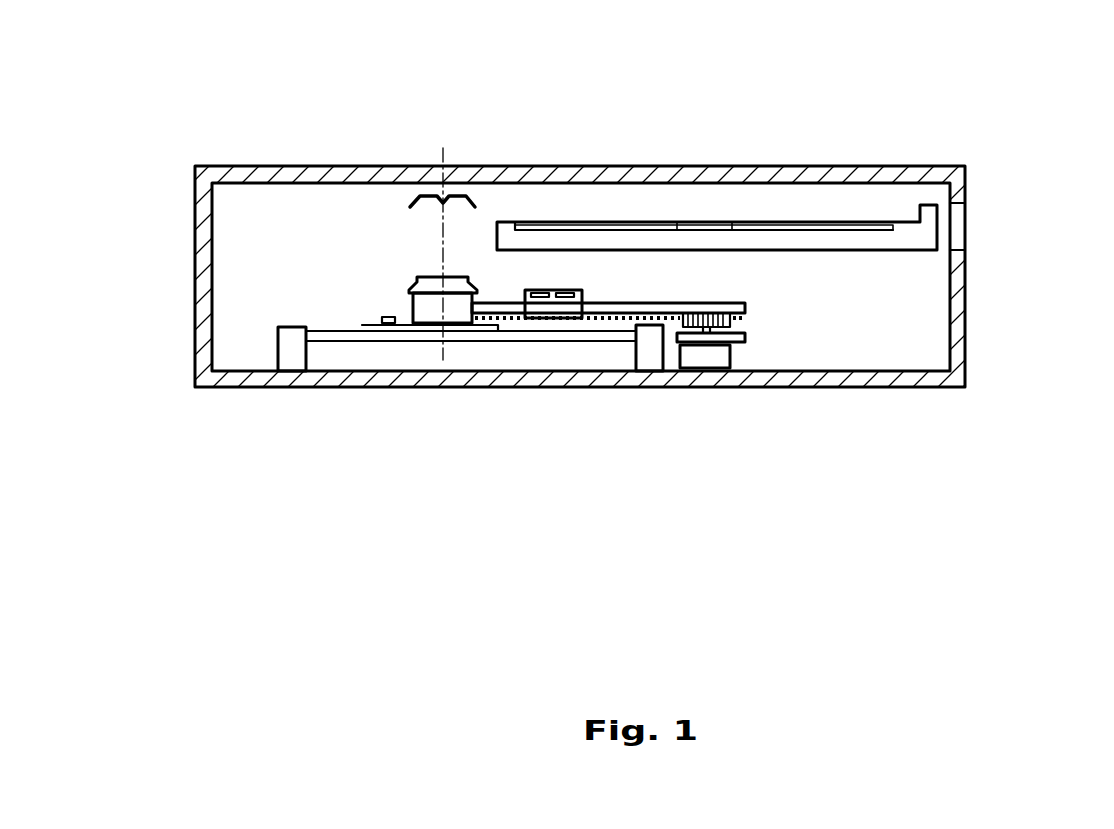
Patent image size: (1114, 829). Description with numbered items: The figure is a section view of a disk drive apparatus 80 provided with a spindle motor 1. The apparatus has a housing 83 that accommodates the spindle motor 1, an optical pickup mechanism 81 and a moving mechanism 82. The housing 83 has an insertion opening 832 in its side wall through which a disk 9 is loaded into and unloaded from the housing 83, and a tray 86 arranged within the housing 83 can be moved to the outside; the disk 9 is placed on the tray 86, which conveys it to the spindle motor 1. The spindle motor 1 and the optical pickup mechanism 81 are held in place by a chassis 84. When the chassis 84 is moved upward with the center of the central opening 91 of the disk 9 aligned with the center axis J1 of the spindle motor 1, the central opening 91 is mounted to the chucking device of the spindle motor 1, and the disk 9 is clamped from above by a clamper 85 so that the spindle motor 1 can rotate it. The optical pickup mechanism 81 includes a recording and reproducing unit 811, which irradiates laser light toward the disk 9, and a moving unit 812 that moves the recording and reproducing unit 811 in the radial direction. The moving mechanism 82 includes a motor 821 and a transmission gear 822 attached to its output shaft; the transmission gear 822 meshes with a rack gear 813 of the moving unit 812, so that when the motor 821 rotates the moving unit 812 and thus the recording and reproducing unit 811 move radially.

The disk drive apparatus 80 is at (306, 78).
The insertion opening 832 is at (956, 230).
The housing 83 is at (810, 177).
The disk 9 is at (625, 230).
The central opening 91 is at (702, 225).
The clamper 85 is at (437, 193).
The center axis J1 is at (440, 340).
The tray 86 is at (895, 263).
The chassis 84 is at (328, 340).
The spindle motor 1 is at (463, 308).
The optical pickup mechanism 81 is at (559, 399).
The recording and reproducing unit 811 is at (548, 313).
The moving unit 812 is at (750, 310).
The rack gear 813 is at (730, 315).
The moving mechanism 82 is at (694, 416).
The transmission gear 822 is at (680, 330).
The motor 821 is at (701, 409).